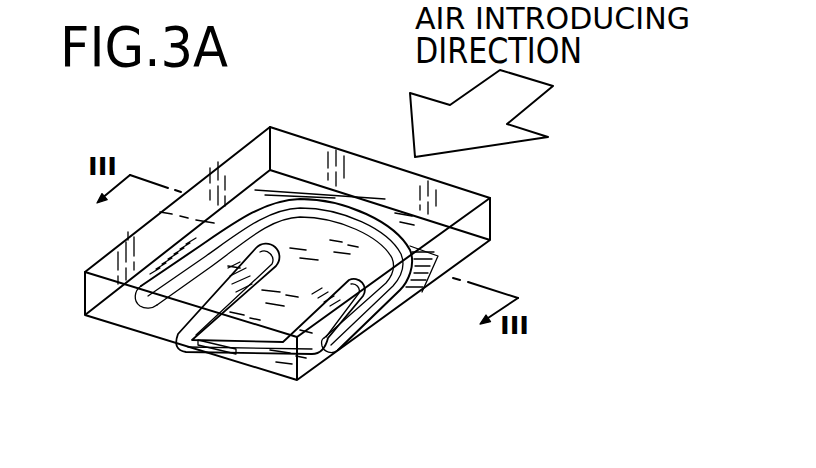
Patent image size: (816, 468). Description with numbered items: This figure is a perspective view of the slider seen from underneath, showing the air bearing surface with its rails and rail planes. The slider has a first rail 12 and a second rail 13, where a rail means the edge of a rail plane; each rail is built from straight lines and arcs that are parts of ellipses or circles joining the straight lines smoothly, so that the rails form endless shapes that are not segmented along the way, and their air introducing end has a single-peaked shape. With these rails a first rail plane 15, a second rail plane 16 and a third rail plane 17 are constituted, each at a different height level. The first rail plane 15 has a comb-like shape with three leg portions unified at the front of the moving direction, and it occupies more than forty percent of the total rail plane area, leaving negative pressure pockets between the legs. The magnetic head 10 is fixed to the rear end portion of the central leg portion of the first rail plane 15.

The magnetic head 10 is at (203, 354).
The first rail 12 is at (447, 262).
The second rail 13 is at (410, 280).
The first rail plane 15 is at (258, 325).
The second rail plane 16 is at (287, 214).
The third rail plane 17 is at (293, 187).